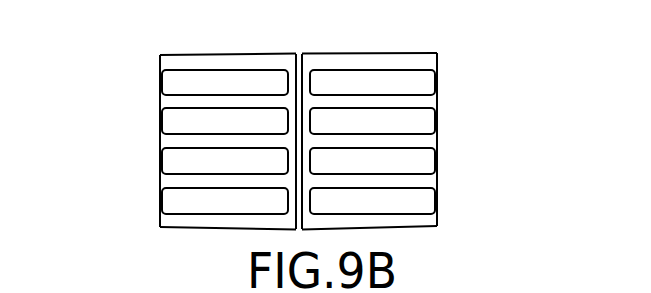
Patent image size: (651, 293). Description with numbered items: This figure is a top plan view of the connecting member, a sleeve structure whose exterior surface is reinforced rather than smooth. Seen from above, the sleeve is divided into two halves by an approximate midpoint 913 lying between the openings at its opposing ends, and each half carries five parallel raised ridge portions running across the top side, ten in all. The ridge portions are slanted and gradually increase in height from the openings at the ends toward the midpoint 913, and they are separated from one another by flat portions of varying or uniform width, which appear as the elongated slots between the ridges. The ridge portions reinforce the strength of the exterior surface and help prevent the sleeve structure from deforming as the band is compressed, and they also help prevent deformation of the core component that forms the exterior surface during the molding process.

The approximate midpoint 913 is at (300, 53).